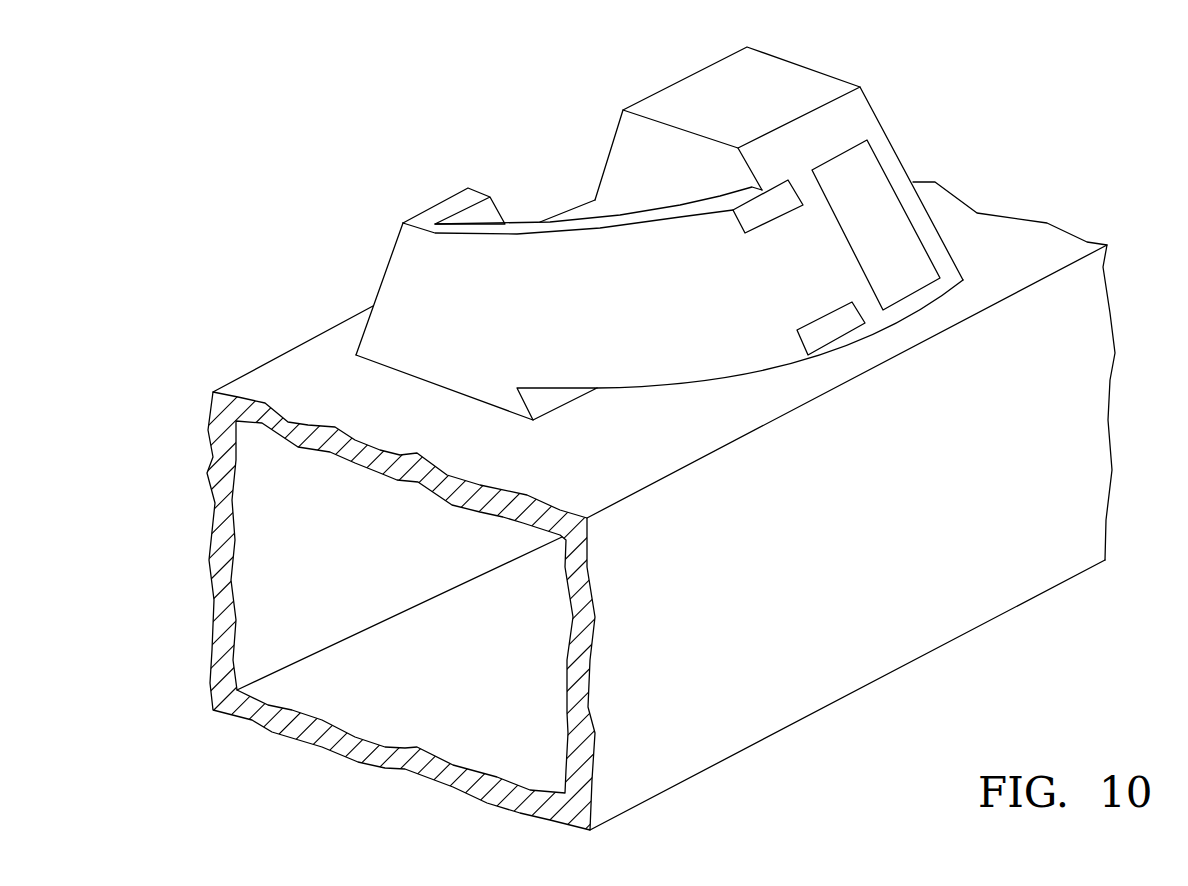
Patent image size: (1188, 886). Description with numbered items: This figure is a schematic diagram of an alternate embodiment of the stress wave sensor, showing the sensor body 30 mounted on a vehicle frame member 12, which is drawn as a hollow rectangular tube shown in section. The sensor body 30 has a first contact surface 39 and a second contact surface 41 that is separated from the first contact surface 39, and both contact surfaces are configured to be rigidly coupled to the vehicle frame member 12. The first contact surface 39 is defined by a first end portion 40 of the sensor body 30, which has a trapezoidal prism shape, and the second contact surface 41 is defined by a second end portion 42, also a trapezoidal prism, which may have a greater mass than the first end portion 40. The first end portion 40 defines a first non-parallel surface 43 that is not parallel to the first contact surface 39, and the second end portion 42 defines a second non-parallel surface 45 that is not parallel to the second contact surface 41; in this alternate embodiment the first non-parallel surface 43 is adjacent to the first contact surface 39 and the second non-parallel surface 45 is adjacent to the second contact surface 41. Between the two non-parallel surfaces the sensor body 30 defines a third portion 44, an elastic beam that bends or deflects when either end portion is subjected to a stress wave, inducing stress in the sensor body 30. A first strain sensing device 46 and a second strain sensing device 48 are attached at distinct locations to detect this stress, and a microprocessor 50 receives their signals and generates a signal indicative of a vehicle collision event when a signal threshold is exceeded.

The vehicle frame member 12 is at (1047, 247).
The sensor body 30 is at (766, 294).
The first contact surface 39 is at (390, 371).
The first end portion 40 is at (448, 207).
The second contact surface 41 is at (933, 297).
The second end portion 42 is at (737, 67).
The first non-parallel surface 43 is at (553, 400).
The third portion 44 is at (640, 337).
The second non-parallel surface 45 is at (853, 108).
The first strain sensing device 46 is at (783, 195).
The second strain sensing device 48 is at (853, 317).
The microprocessor 50 is at (877, 193).